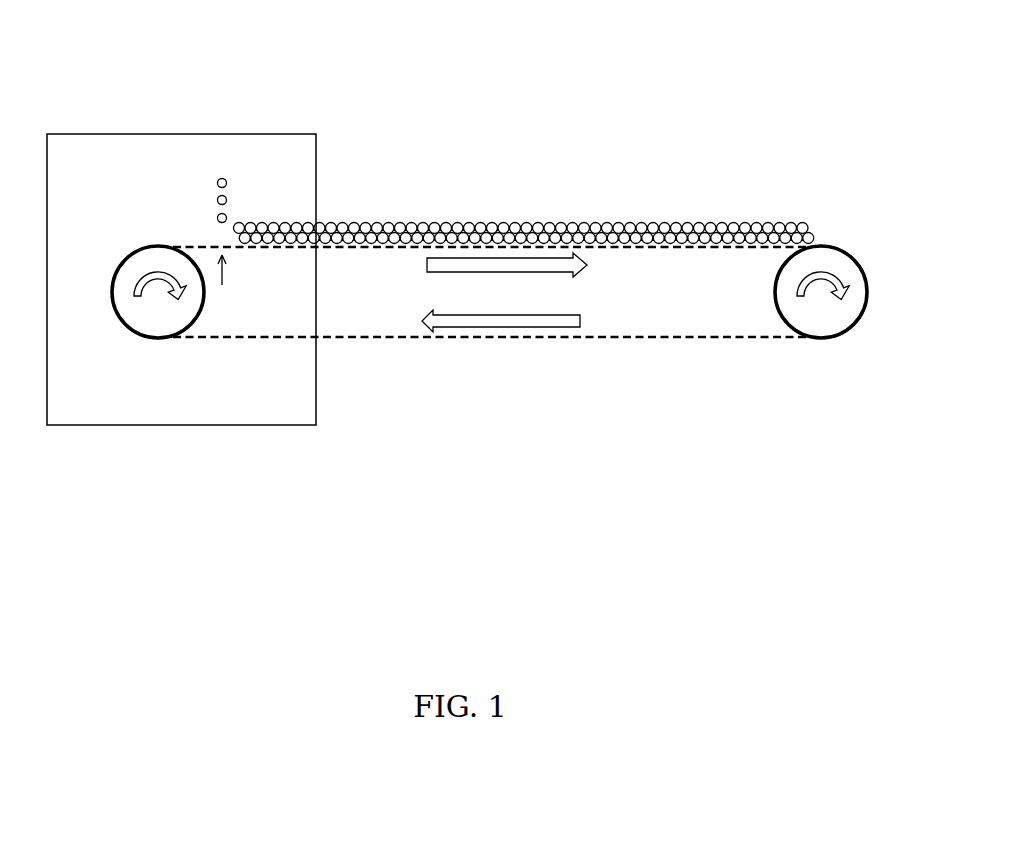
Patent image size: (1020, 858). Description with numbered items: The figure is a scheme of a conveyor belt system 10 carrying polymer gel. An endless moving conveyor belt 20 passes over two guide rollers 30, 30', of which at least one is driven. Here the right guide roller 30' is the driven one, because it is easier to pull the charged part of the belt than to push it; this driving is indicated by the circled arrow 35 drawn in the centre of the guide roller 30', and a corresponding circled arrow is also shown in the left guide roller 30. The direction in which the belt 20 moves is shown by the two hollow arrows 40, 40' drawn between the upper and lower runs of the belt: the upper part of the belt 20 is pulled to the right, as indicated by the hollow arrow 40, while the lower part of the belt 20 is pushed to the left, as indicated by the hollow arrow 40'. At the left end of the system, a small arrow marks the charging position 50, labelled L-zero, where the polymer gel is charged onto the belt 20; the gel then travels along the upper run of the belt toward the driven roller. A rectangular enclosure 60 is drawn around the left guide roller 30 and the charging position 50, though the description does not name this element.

The conveyor belt system 10 is at (471, 130).
The conveyor belt 20 is at (620, 338).
The guide roller 30 is at (132, 192).
The guide roller 30' is at (832, 353).
The circled arrow 35 is at (155, 287).
The hollow arrow 40 is at (460, 402).
The hollow arrow 40' is at (534, 167).
The charging position 50 is at (232, 275).
The housing 60 is at (217, 425).